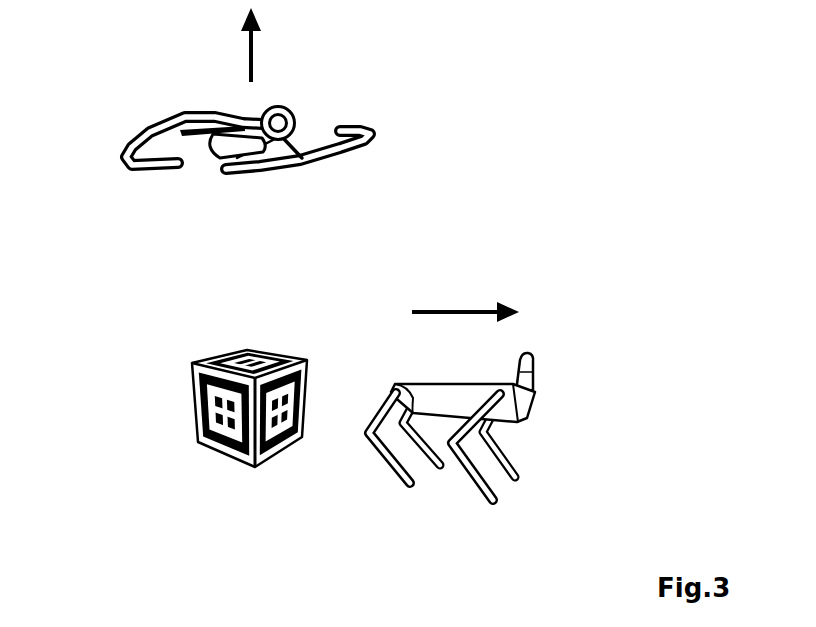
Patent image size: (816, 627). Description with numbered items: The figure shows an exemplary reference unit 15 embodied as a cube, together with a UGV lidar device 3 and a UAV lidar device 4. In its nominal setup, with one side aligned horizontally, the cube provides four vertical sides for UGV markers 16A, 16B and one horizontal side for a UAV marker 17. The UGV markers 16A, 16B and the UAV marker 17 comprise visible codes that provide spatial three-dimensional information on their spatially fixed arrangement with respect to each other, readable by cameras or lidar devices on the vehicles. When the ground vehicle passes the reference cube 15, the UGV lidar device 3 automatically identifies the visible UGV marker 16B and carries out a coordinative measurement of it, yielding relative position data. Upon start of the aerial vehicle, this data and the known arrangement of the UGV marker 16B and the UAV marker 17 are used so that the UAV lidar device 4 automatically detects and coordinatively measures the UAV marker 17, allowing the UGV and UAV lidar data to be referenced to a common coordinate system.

The UGV lidar device 3 is at (525, 388).
The UAV lidar device 4 is at (303, 86).
The reference unit 15 is at (215, 403).
The UGV marker 16A is at (143, 447).
The UGV marker 16B is at (329, 455).
The UAV marker 17 is at (321, 288).